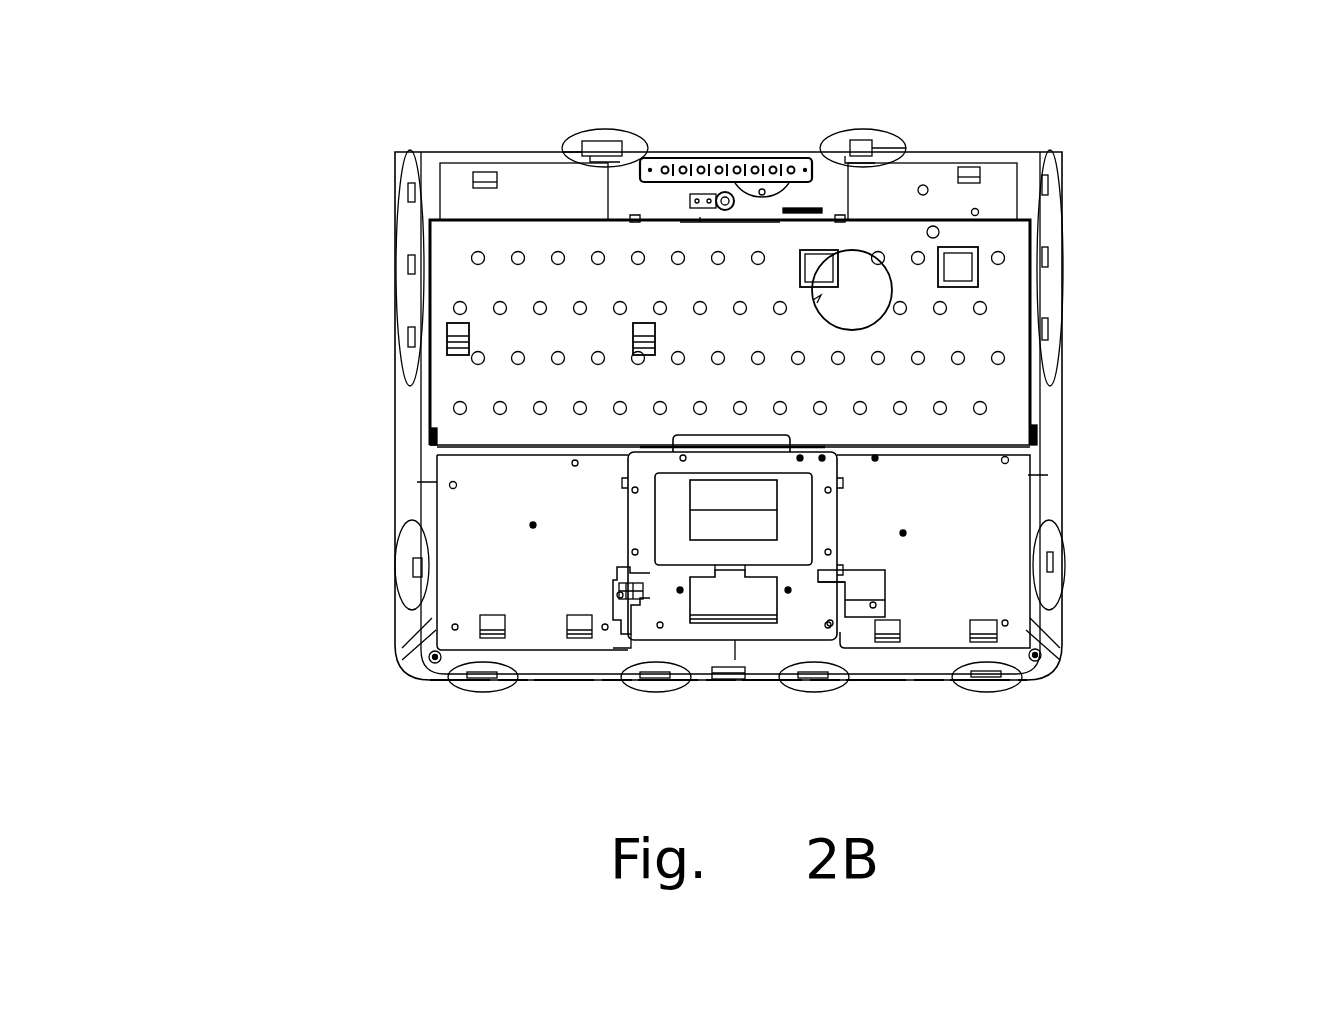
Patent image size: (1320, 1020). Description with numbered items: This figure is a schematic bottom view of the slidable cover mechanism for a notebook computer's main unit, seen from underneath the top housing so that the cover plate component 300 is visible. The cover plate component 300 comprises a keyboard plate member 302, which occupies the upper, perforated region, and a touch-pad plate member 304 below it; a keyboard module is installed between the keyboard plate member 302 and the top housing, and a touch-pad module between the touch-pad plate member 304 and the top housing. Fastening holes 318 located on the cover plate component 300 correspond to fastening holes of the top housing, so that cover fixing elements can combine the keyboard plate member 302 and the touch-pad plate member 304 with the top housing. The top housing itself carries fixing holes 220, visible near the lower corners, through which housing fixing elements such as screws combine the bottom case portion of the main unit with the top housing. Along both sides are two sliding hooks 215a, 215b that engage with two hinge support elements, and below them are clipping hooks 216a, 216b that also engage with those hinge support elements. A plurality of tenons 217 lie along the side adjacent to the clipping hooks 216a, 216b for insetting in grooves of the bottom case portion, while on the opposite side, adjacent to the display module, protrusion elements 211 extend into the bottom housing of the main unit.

The protrusion elements 211 is at (603, 144).
The sliding hook 215a is at (1045, 258).
The sliding hook 215b is at (413, 258).
The clipping hook 216a is at (1060, 550).
The clipping hook 216b is at (405, 548).
The tenons 217 is at (465, 687).
The fixing holes 220 is at (417, 675).
The cover plate component 300 is at (1033, 427).
The keyboard plate member 302 is at (470, 380).
The touch-pad plate member 304 is at (473, 552).
The fastening holes 318 is at (453, 485).